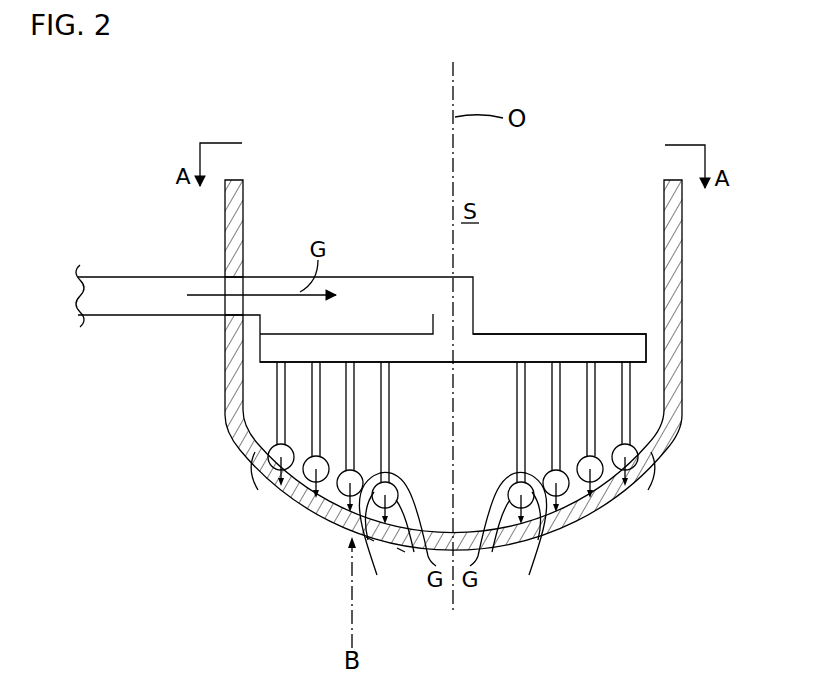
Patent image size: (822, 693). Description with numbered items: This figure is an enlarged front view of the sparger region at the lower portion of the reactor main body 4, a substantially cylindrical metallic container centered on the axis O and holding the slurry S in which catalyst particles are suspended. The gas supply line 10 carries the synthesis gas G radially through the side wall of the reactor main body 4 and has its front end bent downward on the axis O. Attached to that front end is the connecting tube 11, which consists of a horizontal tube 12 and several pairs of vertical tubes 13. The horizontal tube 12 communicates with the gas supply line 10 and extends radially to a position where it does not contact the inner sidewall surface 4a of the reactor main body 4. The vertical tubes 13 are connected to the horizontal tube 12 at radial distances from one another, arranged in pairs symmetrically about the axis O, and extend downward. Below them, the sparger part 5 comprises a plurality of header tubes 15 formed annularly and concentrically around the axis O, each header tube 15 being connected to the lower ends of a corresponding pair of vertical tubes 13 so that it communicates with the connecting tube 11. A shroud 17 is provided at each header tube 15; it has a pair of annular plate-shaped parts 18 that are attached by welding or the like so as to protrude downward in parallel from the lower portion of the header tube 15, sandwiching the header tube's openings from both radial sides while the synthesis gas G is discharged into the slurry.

The reactor main body 4 is at (624, 111).
The inner sidewall surface 4a is at (668, 226).
The sparger part 5 is at (500, 596).
The gas supply line 10 is at (122, 286).
The connecting tube 11 is at (733, 323).
The horizontal tube 12 is at (635, 350).
The vertical tubes 13 is at (381, 383).
The header tubes 15 is at (380, 510).
The shroud 17 is at (256, 490).
The plate-shaped parts 18 is at (400, 550).